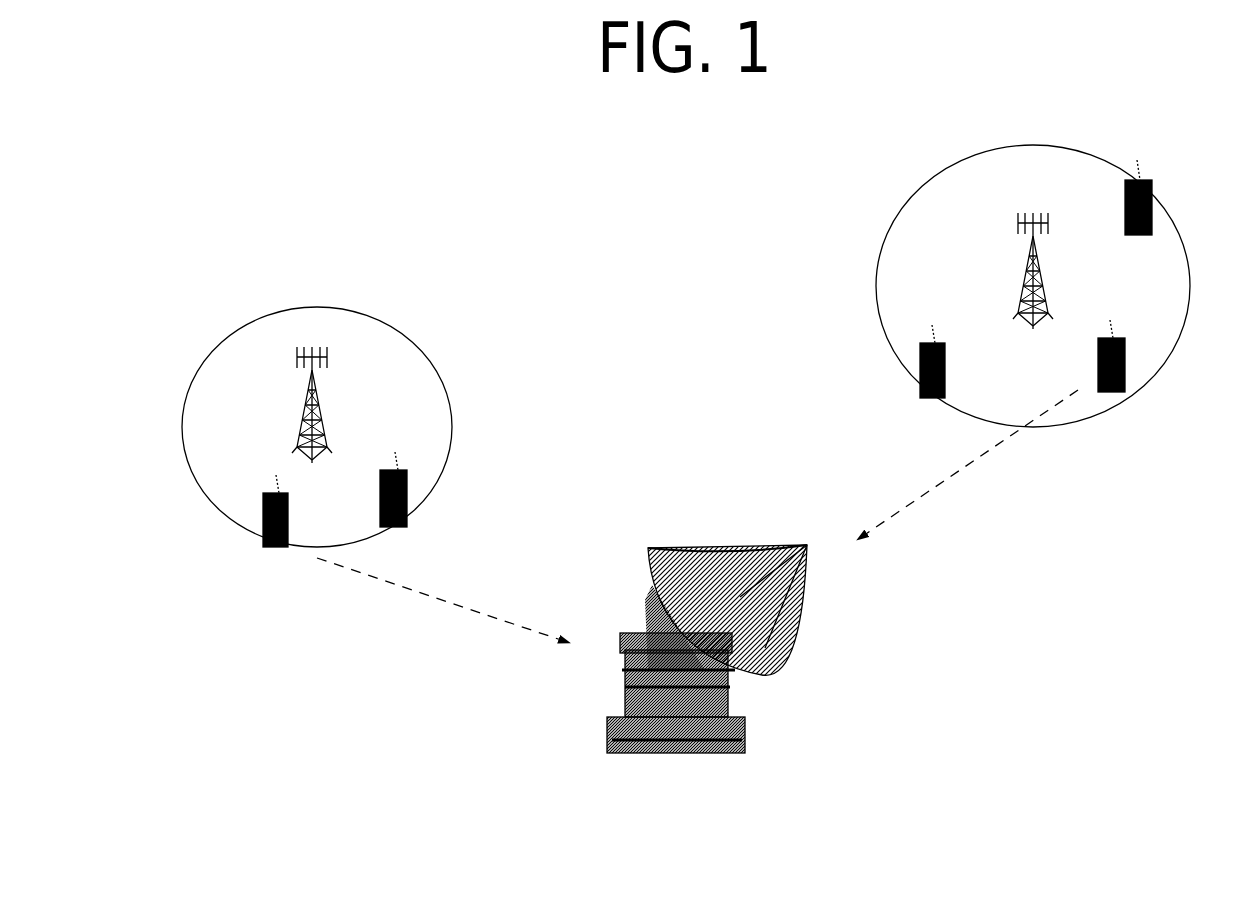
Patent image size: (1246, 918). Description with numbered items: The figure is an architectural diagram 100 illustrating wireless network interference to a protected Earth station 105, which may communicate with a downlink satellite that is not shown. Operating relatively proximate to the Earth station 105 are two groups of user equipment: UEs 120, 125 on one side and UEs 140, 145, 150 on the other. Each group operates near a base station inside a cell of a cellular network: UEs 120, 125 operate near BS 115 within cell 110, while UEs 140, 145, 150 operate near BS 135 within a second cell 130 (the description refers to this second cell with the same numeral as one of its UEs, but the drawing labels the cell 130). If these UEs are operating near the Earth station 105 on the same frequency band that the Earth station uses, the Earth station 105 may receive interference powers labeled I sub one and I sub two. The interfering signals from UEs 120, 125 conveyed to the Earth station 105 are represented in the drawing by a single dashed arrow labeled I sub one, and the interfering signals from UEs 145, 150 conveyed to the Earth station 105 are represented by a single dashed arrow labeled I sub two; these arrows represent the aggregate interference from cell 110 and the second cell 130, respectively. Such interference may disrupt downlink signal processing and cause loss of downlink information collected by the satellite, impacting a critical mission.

The wireless communication system 100 is at (280, 202).
The Earth station 105 is at (832, 682).
The cell 110 is at (403, 337).
The base station 115 is at (288, 405).
The UE 120 is at (258, 547).
The UE 125 is at (413, 529).
The second cell coverage area 130 is at (875, 277).
The base station 135 is at (1018, 270).
The UE 140 is at (1157, 158).
The UE 145 is at (1130, 393).
The UE 150 is at (912, 400).